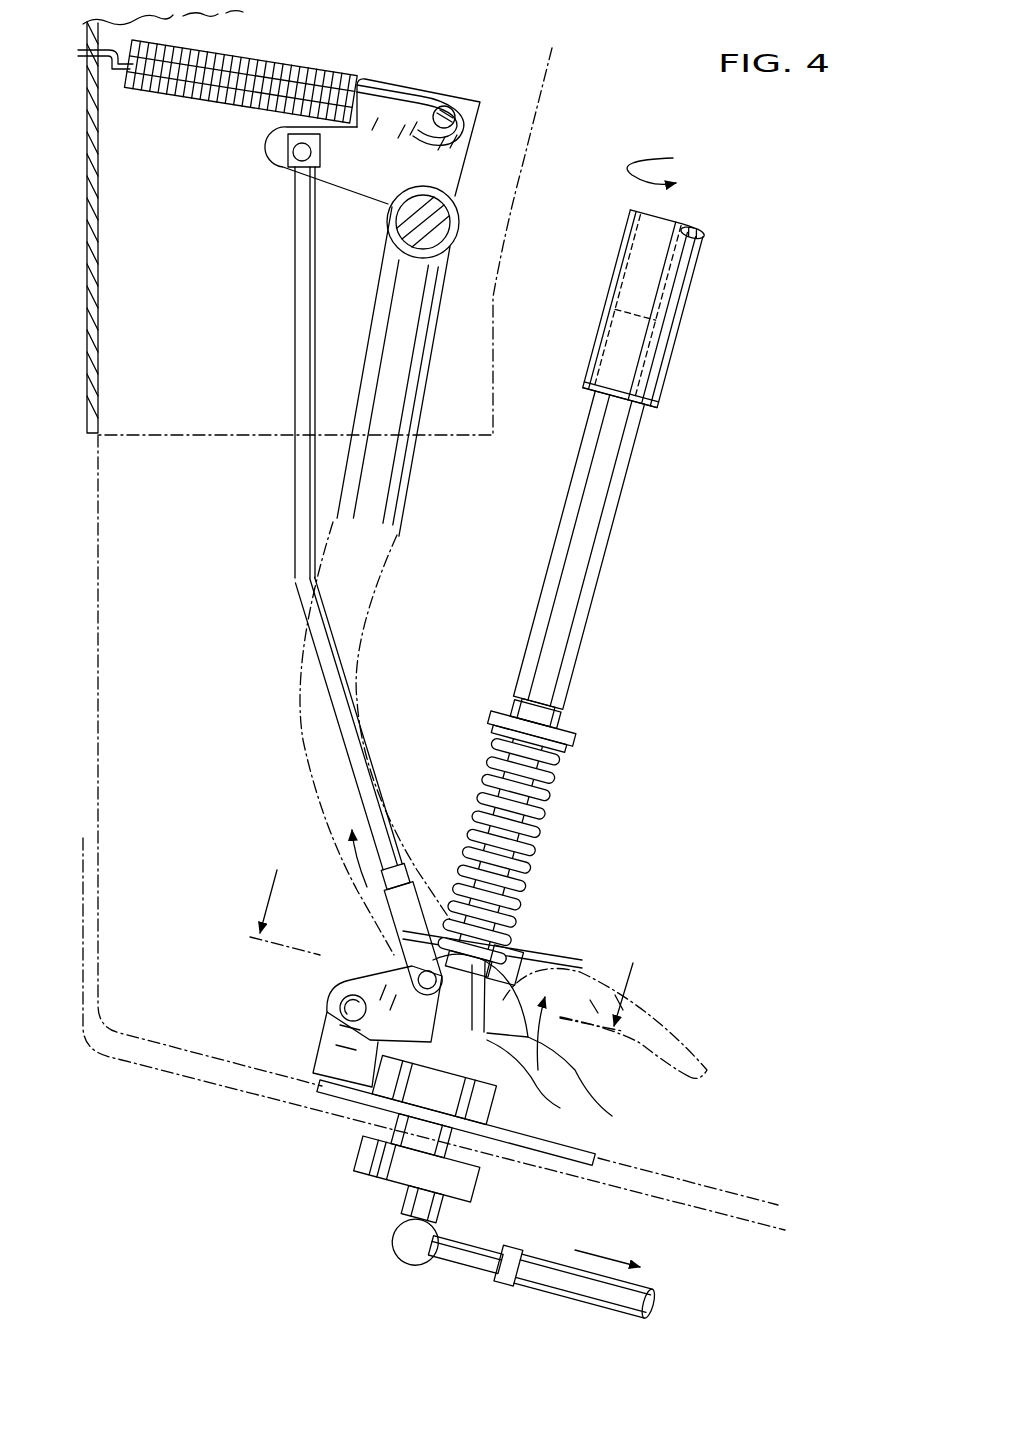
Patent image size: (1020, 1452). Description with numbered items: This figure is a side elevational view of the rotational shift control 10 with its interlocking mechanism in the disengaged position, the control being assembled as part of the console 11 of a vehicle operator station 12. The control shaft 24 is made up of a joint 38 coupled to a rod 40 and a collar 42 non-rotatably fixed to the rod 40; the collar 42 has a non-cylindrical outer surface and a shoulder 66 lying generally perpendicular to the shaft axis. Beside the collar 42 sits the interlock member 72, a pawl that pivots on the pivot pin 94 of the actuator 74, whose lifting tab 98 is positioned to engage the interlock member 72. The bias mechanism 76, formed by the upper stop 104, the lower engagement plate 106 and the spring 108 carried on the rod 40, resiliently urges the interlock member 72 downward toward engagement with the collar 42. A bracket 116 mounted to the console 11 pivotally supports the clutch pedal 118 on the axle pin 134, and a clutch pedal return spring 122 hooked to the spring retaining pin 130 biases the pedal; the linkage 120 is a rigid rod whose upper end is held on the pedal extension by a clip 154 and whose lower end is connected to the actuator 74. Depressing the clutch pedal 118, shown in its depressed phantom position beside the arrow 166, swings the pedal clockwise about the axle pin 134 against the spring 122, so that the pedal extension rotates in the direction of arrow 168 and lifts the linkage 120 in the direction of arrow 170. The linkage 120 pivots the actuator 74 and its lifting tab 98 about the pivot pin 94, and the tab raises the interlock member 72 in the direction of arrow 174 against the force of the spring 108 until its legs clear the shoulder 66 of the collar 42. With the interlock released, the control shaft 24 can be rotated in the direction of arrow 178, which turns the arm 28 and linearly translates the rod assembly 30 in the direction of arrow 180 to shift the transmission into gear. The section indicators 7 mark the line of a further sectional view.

The section line 7 is at (445, 944).
The rotational shift control 10 is at (754, 209).
The console 11 is at (100, 971).
The vehicle operator station 12 is at (90, 906).
The control shaft 24 is at (688, 343).
The arm 28 is at (357, 1152).
The rod assembly 30 is at (577, 1308).
The joint 38 is at (667, 389).
The rod 40 is at (600, 553).
The collar 42 is at (487, 1091).
The shoulder 66 is at (564, 1082).
The interlock member 72 is at (520, 1000).
The actuator 74 is at (418, 972).
The bias mechanism 76 is at (558, 787).
The pivot pin 94 is at (340, 1011).
The lifting tab 98 is at (470, 1043).
The upper stop 104 is at (577, 720).
The lower engagement plate 106 is at (515, 950).
The spring 108 is at (540, 825).
The bracket 116 is at (525, 163).
The clutch pedal 118 is at (298, 703).
The linkage 120 is at (292, 494).
The clutch pedal return spring 122 is at (250, 60).
The spring retaining pin 130 is at (433, 112).
The axle pin 134 is at (452, 224).
The clip 154 is at (283, 170).
The pedal in depressed position 166 is at (692, 1022).
The arrow 168 is at (266, 128).
The arrow 170 is at (357, 865).
The arrow 174 is at (540, 1070).
The arrow 178 is at (647, 158).
The arrow 180 is at (603, 1255).